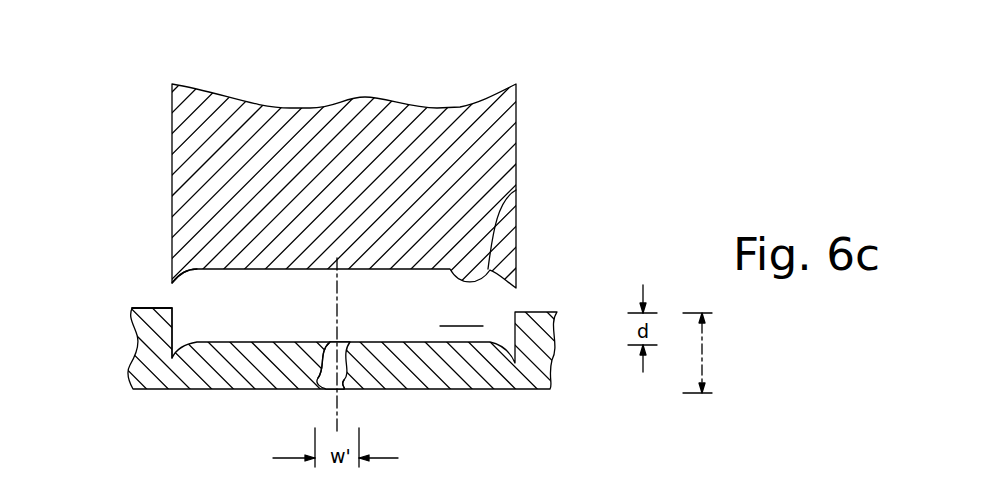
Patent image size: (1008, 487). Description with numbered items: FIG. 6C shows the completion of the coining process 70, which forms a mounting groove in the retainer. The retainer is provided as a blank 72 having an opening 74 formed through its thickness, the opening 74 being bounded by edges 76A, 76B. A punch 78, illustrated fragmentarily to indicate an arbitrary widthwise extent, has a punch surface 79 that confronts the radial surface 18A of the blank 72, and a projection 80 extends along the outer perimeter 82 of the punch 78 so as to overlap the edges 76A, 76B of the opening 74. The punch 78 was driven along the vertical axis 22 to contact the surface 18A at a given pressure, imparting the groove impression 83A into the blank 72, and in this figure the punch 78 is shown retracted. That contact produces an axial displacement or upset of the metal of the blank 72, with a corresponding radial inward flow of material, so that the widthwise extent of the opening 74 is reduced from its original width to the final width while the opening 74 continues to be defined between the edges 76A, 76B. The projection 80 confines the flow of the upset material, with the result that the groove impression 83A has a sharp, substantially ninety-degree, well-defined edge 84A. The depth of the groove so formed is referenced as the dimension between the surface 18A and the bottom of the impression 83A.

The coining process 70 is at (632, 98).
The punch 78 is at (517, 145).
The punch surface 79 is at (517, 190).
The outer perimeter 82 is at (160, 214).
The projection 80 is at (172, 284).
The radial surface 18A is at (158, 309).
The edge 84A is at (172, 308).
The edge of opening 76B is at (330, 341).
The edge of opening 76A is at (330, 389).
The opening 74 is at (355, 338).
The groove impression 83A is at (461, 315).
The vertical axis 22 is at (337, 413).
The blank 72 is at (550, 375).